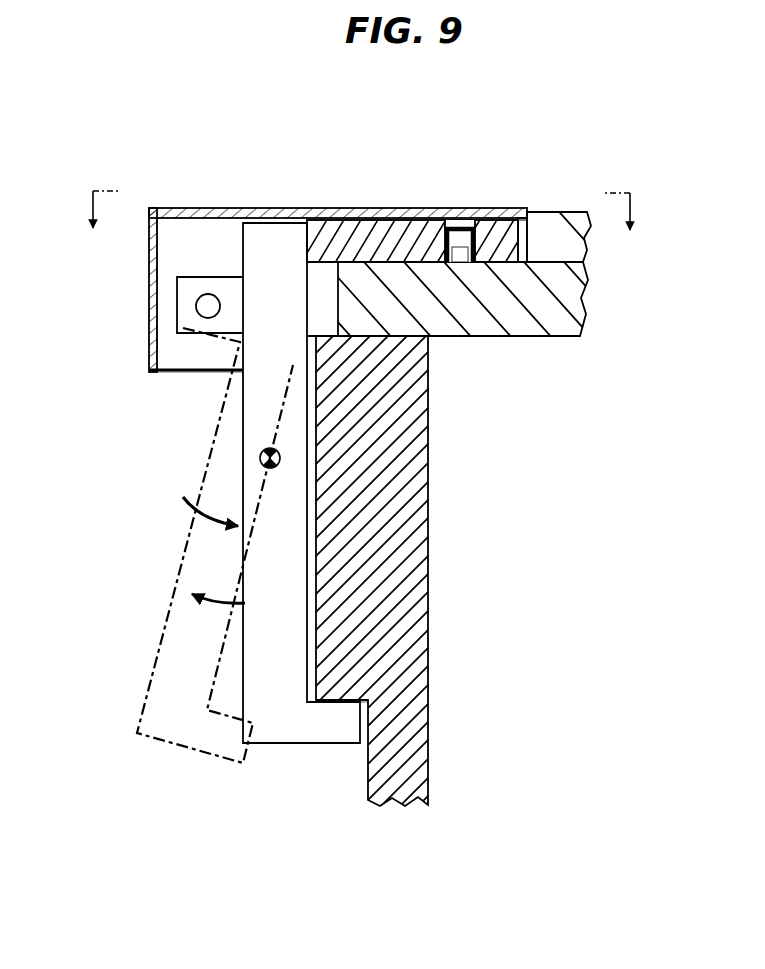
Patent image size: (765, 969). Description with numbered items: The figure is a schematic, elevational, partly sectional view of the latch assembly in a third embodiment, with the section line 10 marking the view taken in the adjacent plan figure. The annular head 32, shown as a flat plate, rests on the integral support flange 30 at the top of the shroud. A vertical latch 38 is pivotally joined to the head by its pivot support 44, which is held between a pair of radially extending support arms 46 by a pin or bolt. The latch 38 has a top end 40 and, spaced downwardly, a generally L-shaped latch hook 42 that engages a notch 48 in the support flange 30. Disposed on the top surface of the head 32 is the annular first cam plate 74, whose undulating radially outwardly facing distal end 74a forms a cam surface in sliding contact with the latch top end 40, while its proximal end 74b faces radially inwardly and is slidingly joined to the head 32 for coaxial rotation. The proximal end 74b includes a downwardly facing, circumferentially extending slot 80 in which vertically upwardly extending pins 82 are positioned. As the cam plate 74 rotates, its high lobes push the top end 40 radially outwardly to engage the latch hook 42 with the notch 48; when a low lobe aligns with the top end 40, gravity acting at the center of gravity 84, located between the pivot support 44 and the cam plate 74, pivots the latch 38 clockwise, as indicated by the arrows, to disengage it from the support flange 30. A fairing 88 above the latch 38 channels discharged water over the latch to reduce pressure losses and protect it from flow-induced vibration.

The section line of FIG. 10 is at (361, 226).
The support flange 30 is at (430, 560).
The head 32 is at (548, 211).
The latch 38 is at (215, 545).
The top end 40 is at (243, 238).
The latch hook 42 is at (283, 745).
The pivot support 44 is at (196, 307).
The support arm 46 is at (188, 372).
The notch 48 is at (364, 706).
The first cam plate 74 is at (355, 217).
The distal end 74a is at (307, 240).
The proximal end 74b is at (497, 219).
The slot 80 is at (460, 226).
The pin 82 is at (458, 240).
The center of gravity 84 is at (260, 455).
The fairing 88 is at (230, 208).